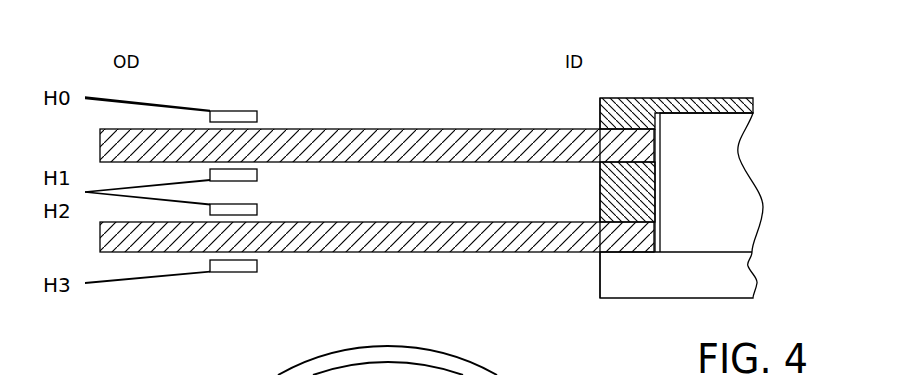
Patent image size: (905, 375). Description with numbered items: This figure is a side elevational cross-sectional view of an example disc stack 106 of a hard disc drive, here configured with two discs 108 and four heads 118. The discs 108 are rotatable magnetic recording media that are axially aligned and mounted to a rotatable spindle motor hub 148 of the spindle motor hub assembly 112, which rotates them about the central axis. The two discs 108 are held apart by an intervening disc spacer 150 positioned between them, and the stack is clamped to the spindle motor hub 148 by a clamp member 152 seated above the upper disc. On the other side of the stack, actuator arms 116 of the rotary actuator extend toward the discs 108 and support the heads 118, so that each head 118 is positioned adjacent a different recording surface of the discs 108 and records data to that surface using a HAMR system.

The media stack 106 is at (768, 46).
The magnetic recording media (discs) 108 is at (378, 141).
The spindle motor hub assembly 112 is at (777, 152).
The actuator arms 116 is at (155, 103).
The data transducers (heads) 118 is at (235, 111).
The spindle motor hub 148 is at (732, 205).
The disc spacer 150 is at (600, 192).
The clamp member 152 is at (673, 97).